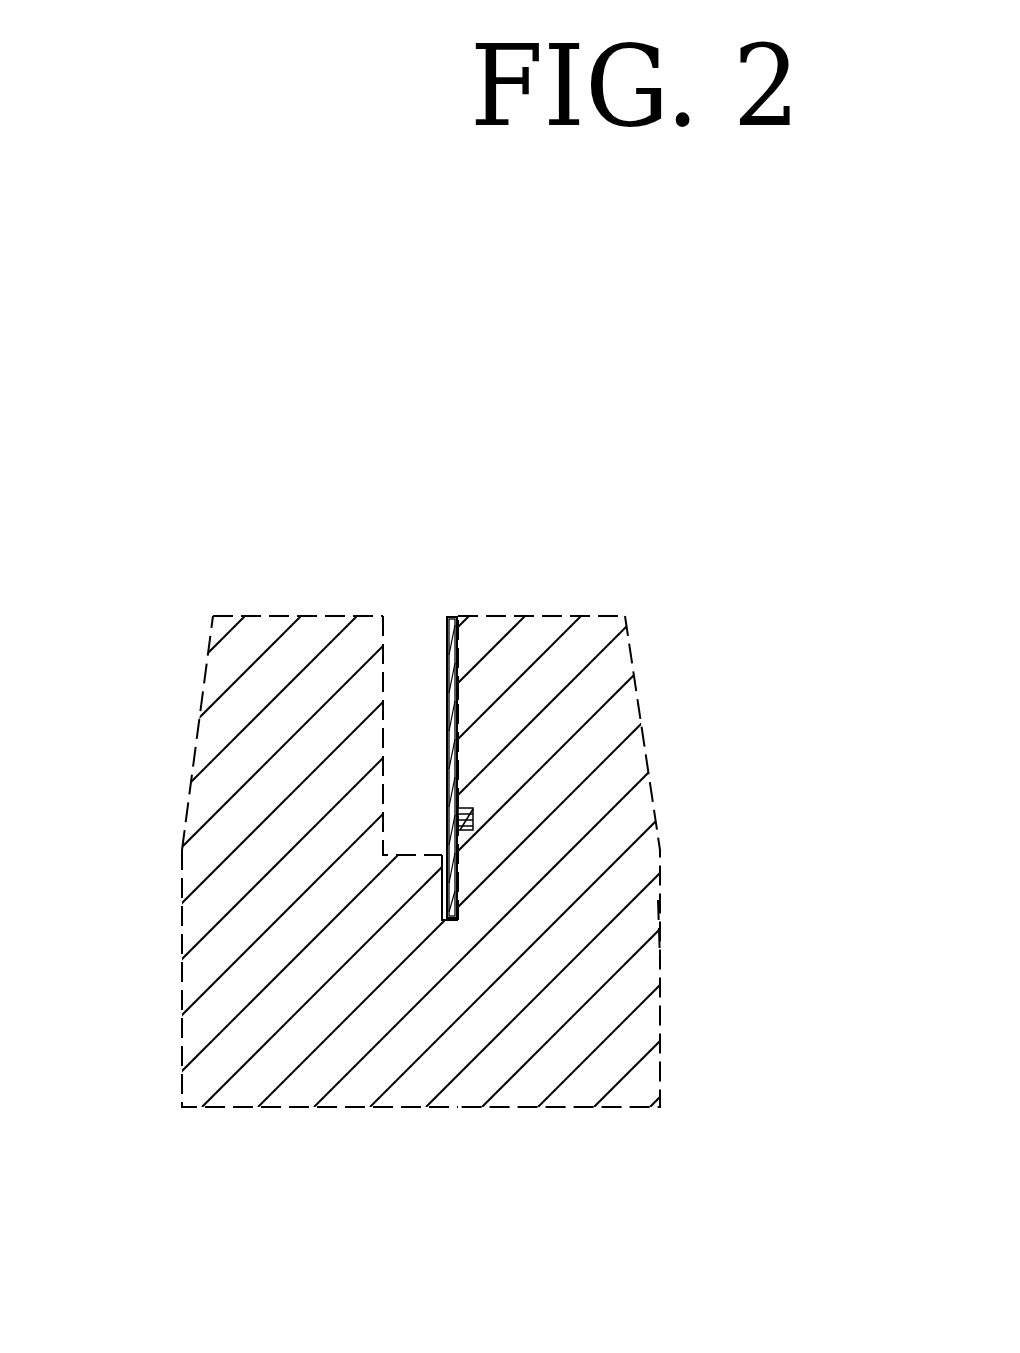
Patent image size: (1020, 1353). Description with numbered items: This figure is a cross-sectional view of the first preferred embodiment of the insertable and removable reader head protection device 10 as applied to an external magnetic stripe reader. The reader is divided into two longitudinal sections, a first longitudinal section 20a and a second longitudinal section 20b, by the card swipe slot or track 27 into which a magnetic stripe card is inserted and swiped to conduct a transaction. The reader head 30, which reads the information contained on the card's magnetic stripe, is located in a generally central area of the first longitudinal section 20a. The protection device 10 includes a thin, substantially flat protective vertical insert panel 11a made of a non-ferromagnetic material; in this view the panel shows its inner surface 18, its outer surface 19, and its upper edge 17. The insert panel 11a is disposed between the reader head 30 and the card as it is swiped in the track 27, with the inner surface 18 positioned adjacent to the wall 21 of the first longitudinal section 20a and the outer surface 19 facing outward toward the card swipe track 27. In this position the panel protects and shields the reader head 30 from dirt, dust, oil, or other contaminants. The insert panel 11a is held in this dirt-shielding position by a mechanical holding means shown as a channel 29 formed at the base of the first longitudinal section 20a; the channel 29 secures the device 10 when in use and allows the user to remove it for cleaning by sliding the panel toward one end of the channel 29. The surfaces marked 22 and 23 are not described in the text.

The insertable and removable reader head protection device 10 is at (455, 962).
The protective vertical insert panel 11a is at (447, 795).
The upper edge 17 is at (447, 617).
The inner surface 18 is at (457, 688).
The outer surface 19 is at (447, 693).
The first longitudinal section 20a is at (638, 557).
The second longitudinal section 20b is at (228, 562).
The wall 21 is at (477, 630).
The top surface of first die part 22 is at (553, 615).
The side surface of first die part 23 is at (661, 928).
The card swipe slot or track 27 is at (397, 640).
The channel 29 is at (440, 913).
The reader head 30 is at (517, 767).